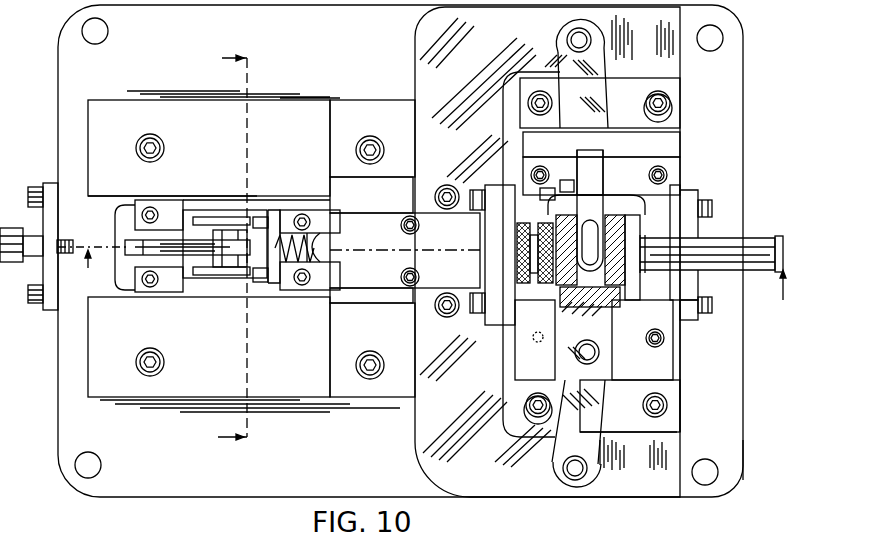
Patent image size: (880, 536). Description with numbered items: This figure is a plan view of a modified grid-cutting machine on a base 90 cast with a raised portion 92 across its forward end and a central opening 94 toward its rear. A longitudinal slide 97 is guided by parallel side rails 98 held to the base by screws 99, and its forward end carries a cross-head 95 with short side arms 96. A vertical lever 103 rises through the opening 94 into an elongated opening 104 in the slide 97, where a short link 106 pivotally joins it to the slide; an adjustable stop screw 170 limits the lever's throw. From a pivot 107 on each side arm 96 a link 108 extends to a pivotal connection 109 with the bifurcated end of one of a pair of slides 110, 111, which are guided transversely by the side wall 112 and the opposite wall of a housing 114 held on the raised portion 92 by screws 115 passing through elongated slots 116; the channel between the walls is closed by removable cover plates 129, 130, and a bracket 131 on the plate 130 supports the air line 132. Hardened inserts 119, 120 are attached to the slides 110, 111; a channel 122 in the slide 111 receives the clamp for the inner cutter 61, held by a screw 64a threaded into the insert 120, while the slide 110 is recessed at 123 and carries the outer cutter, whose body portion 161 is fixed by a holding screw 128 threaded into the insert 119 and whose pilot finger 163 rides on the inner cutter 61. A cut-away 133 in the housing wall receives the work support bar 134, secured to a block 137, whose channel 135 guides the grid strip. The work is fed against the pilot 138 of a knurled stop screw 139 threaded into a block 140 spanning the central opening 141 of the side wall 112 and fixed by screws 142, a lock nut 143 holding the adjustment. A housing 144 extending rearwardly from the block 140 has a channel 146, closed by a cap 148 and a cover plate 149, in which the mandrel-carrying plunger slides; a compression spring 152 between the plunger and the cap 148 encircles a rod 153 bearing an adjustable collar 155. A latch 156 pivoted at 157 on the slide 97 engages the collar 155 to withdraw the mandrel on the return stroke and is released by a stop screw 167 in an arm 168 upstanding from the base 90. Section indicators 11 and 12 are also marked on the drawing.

The section line 11 is at (432, 286).
The section line 12 is at (216, 248).
The inner cutter 61 is at (627, 225).
The screw 64a is at (673, 187).
The base 90 is at (58, 408).
The raised portion 92 is at (743, 462).
The opening 94 is at (115, 217).
The cross-head 95 is at (415, 415).
The side arms 96 is at (548, 10).
The slide 97 is at (200, 202).
The side rails 98 is at (305, 110).
The screws 99 is at (164, 146).
The lever 103 is at (240, 270).
The elongated opening 104 is at (205, 278).
The link 106 is at (202, 278).
The pivot 107 is at (571, 42).
The link 108 is at (600, 120).
The pivotal connection 109 is at (576, 350).
The slide 110 is at (565, 306).
The slide 111 is at (548, 197).
The side wall 112 is at (520, 347).
The housing 114 is at (673, 388).
The screws 115 is at (671, 102).
The elongated slots 116 is at (663, 123).
The hardened insert 119 is at (560, 292).
The hardened insert 120 is at (603, 190).
The channel 122 is at (698, 233).
The recess 123 is at (688, 287).
The holding screw 128 is at (618, 273).
The cover plate 129 is at (662, 357).
The cover plate 130 is at (665, 145).
The bracket 131 is at (600, 170).
The air line 132 is at (583, 168).
The cut-away portion 133 is at (688, 215).
The work support bar 134 is at (763, 240).
The channel 135 is at (750, 250).
The block 137 is at (690, 320).
The pilot 138 is at (533, 288).
The stop screw 139 is at (538, 272).
The block 140 is at (490, 181).
The central opening 141 is at (522, 214).
The screws 142 is at (478, 210).
The lock nut 143 is at (517, 262).
The housing 144 is at (292, 212).
The channel 146 is at (296, 290).
The cap 148 is at (300, 292).
The cover plate 149 is at (355, 225).
The compression spring 152 is at (312, 255).
The rod 153 is at (277, 210).
The collar 155 is at (230, 235).
The latch 156 is at (163, 238).
The pivot 157 is at (148, 256).
The body portion 161 is at (613, 283).
The pilot finger 163 is at (646, 339).
The stop screw 167 is at (20, 262).
The arm 168 is at (52, 180).
The stop screw 170 is at (28, 235).